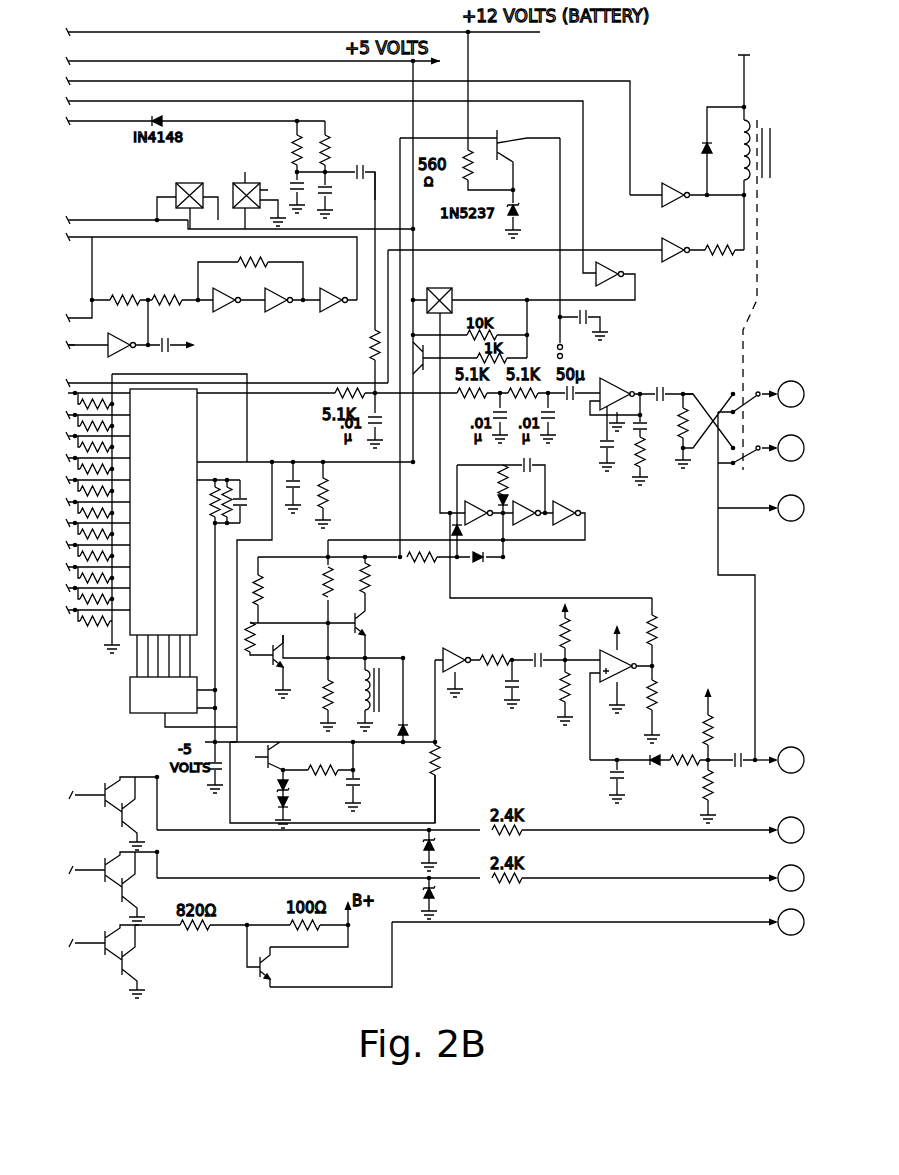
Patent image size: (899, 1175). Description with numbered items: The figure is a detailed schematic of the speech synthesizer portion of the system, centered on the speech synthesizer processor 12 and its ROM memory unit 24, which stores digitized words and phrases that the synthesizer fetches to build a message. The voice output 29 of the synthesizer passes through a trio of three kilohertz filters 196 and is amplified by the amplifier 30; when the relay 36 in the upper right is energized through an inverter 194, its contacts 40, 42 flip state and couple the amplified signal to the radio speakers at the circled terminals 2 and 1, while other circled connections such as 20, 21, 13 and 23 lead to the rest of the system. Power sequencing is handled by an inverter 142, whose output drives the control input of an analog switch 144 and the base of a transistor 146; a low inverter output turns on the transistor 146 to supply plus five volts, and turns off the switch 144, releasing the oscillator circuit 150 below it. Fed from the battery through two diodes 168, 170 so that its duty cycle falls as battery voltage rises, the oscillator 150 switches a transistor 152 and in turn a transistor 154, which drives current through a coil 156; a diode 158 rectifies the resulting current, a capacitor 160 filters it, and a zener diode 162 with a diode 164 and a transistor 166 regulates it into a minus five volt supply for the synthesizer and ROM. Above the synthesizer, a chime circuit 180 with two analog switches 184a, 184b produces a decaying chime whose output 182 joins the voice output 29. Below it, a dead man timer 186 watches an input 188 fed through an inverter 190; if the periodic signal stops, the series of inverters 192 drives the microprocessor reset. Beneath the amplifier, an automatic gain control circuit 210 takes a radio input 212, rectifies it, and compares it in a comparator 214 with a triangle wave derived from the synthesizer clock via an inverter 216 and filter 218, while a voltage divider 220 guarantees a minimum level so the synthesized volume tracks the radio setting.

The speech synthesizer processor 12 is at (170, 514).
The ROM memory unit 24 is at (130, 703).
The output 29 is at (262, 395).
The amplifier 30 is at (608, 386).
The relay 36 is at (753, 100).
The contact 40 is at (748, 400).
The contact 42 is at (743, 468).
The inverter 142 is at (606, 262).
The analog switch 144 is at (437, 288).
The transistor 146 is at (375, 345).
The oscillator circuit 150 is at (465, 528).
The transistor 152 is at (278, 668).
The transistor 154 is at (370, 622).
The coil 156 is at (372, 668).
The diode 158 is at (412, 730).
The capacitor 160 is at (357, 792).
The zener diode 162 is at (289, 784).
The diode 164 is at (278, 806).
The transistor 166 is at (262, 756).
The diode 168 is at (454, 530).
The diode 170 is at (484, 562).
The chime circuit 180 is at (223, 224).
The analog switch 184a is at (176, 195).
The analog switch 184b is at (242, 183).
The output 182 is at (374, 322).
The dead man timer 186 is at (238, 332).
The input 188 is at (95, 345).
The inverter 190 is at (112, 350).
The inverters 192 is at (230, 290).
The inverter 194 is at (666, 183).
The filters 196 is at (584, 514).
The automatic gain control circuit 210 is at (617, 703).
The input 212 is at (772, 746).
The comparator 214 is at (646, 660).
The inverter 216 is at (455, 646).
The filter 218 is at (546, 720).
The voltage divider 220 is at (724, 740).
The terminal 1 is at (791, 448).
The terminal 2 is at (791, 394).
The terminal 13 is at (791, 922).
The inputs 20 is at (791, 830).
The terminal 21 is at (791, 878).
The connector pin 23 is at (791, 760).